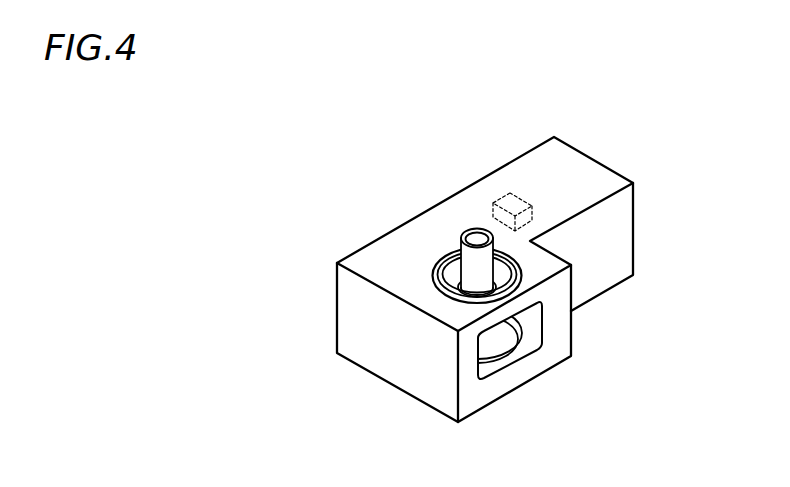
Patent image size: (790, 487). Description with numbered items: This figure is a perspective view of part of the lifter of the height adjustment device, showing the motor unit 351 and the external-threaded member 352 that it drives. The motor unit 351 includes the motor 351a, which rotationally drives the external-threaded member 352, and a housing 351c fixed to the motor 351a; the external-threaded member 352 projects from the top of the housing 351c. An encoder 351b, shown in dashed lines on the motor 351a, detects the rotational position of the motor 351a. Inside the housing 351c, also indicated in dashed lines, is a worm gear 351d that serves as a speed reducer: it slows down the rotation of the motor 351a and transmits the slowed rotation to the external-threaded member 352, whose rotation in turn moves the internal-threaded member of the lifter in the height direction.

The motor unit 351 is at (514, 249).
The motor 351a is at (533, 174).
The encoder 351b is at (531, 224).
The housing 351c is at (377, 264).
The worm gear 351d is at (427, 233).
The external-threaded member 352 is at (477, 230).